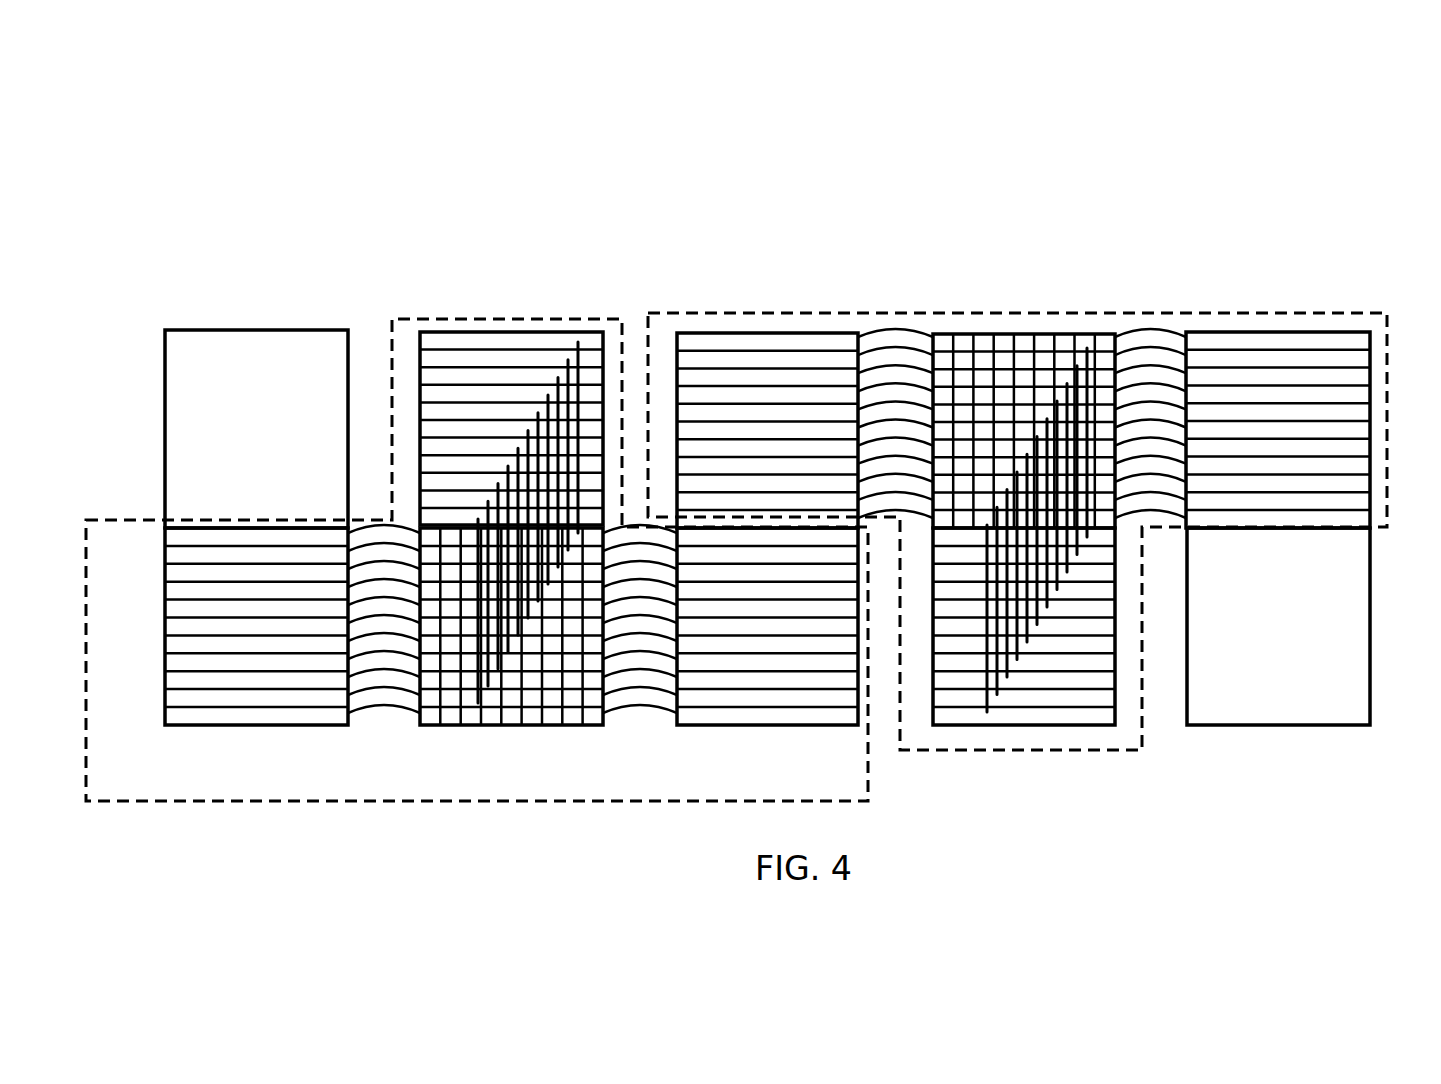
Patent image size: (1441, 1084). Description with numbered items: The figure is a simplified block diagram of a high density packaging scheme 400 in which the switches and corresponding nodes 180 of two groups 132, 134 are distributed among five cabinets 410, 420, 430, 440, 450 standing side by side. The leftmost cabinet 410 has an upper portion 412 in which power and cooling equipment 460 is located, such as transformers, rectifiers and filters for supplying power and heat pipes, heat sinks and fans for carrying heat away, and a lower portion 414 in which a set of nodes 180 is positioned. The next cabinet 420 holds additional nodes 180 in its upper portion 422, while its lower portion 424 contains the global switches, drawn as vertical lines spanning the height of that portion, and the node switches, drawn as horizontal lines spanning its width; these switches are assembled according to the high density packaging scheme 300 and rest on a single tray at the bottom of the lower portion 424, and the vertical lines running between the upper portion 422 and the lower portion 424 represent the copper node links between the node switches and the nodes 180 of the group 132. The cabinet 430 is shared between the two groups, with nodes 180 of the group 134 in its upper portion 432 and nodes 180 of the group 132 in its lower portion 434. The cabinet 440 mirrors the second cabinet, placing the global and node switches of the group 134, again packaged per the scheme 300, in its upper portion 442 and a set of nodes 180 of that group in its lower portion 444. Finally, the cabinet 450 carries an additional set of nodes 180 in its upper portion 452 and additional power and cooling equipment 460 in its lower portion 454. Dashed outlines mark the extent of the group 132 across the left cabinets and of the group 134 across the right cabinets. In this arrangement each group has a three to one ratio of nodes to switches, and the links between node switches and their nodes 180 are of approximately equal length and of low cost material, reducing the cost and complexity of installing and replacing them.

The high density packaging scheme 400 is at (1285, 163).
The cabinet 410 is at (759, 514).
The cabinet 420 is at (478, 513).
The cabinet 430 is at (735, 515).
The cabinet 440 is at (849, 505).
The cabinet 450 is at (1312, 484).
The power and cooling equipment 460 is at (322, 330).
The nodes 180 is at (221, 742).
The high density packaging scheme 300 is at (1088, 332).
The group 132 is at (478, 802).
The group 134 is at (952, 752).
The upper portion 412 is at (140, 450).
The lower portion 414 is at (140, 628).
The upper portion 422 is at (408, 447).
The lower portion 424 is at (411, 722).
The upper portion 432 is at (668, 345).
The lower portion 434 is at (666, 725).
The upper portion 442 is at (925, 328).
The lower portion 444 is at (1127, 680).
The upper portion 452 is at (1377, 443).
The lower portion 454 is at (1387, 622).